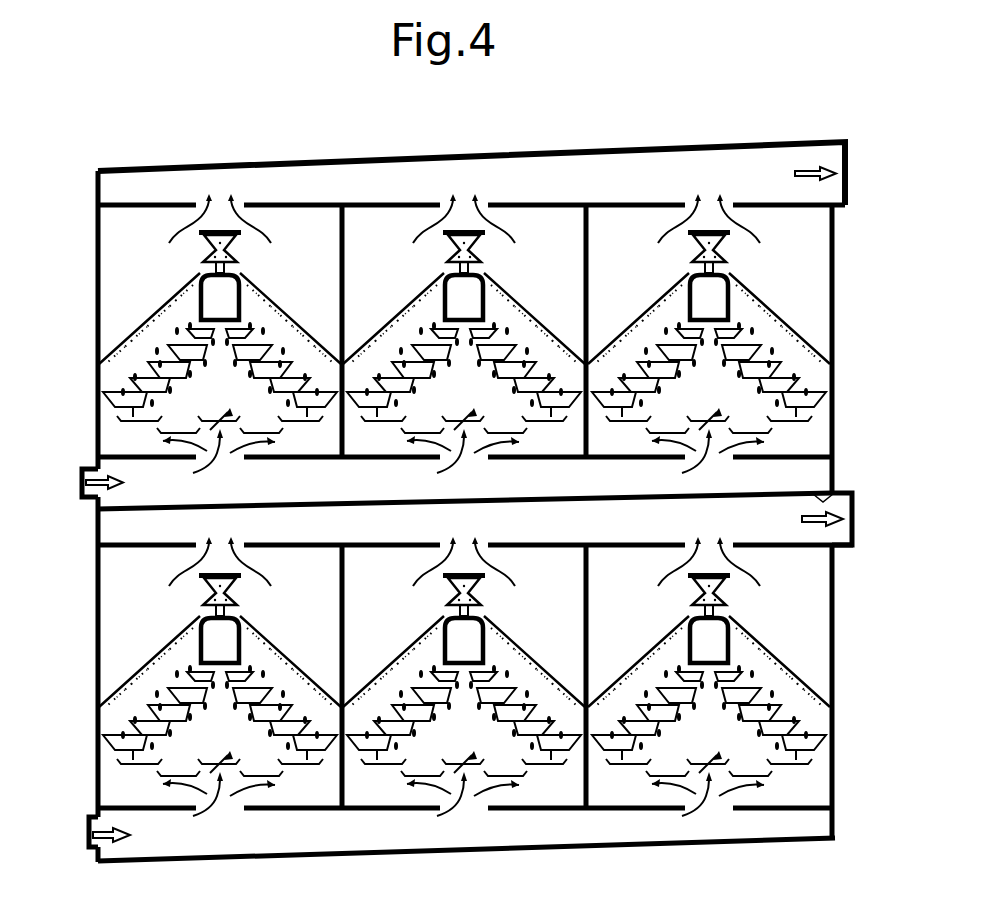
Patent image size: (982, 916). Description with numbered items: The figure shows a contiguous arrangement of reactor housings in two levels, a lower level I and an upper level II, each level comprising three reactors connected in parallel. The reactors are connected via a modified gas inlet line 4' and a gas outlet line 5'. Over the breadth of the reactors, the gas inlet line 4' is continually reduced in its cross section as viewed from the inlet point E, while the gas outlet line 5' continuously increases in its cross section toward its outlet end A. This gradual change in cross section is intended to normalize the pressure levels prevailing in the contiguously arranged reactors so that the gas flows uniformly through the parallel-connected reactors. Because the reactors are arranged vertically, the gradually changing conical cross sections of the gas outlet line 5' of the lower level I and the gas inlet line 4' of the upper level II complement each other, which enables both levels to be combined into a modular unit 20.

The modified gas inlet line 4' is at (466, 688).
The gas outlet line 5' is at (851, 477).
The modular unit 20 is at (70, 447).
The outlet end A is at (838, 519).
The inlet point E is at (98, 835).
The lower level I is at (859, 686).
The upper level II is at (864, 344).